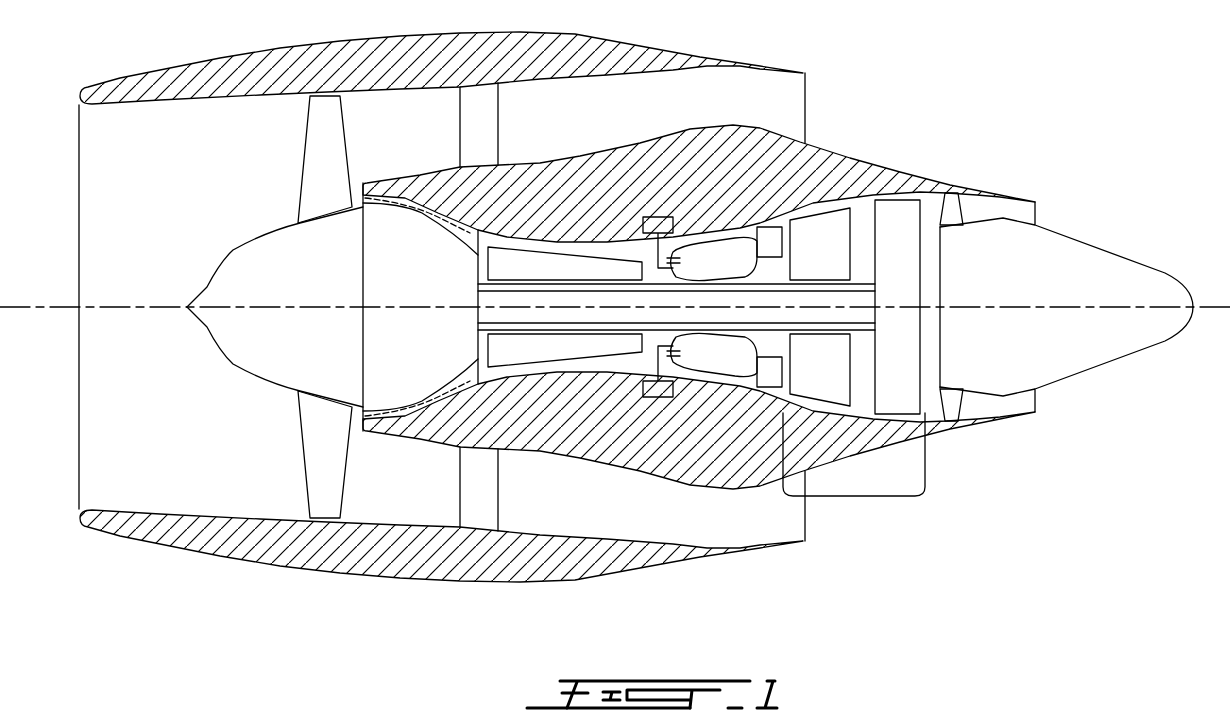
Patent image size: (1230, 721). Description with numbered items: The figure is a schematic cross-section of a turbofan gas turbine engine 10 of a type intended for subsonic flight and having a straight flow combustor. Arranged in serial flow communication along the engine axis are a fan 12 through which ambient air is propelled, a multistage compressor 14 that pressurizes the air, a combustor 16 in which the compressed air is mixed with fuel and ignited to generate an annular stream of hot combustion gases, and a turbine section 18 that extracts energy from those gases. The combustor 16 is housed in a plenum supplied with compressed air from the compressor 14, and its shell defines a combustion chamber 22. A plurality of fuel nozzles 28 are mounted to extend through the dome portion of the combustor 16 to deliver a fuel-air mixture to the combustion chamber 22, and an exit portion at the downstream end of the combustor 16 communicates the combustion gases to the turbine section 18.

The gas turbine engine 10 is at (975, 92).
The fan 12 is at (320, 445).
The multistage compressor 14 is at (542, 260).
The combustor 16 is at (703, 258).
The turbine section 18 is at (853, 497).
The combustion chamber 22 is at (731, 367).
The fuel nozzles 28 is at (667, 352).